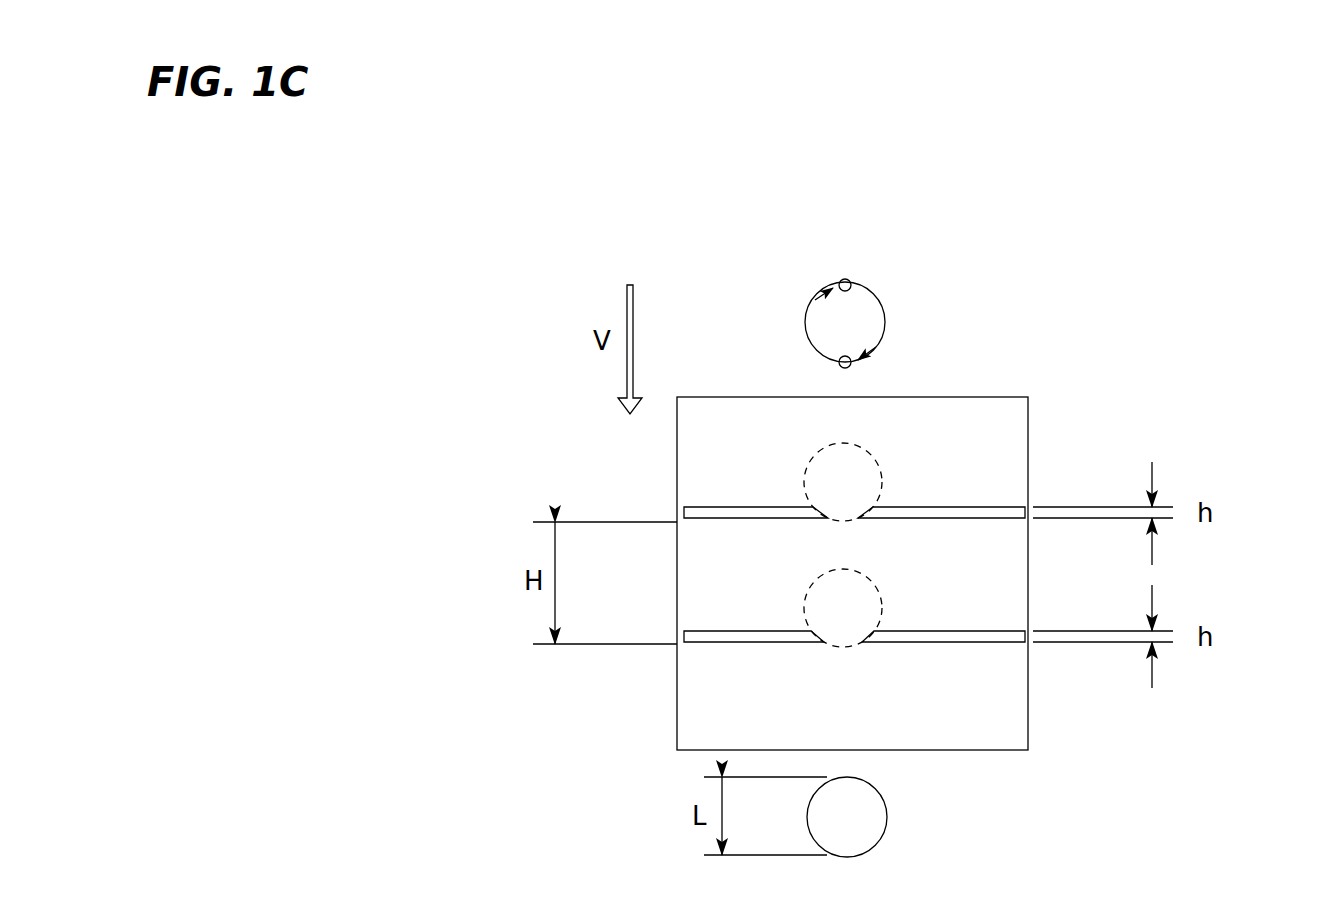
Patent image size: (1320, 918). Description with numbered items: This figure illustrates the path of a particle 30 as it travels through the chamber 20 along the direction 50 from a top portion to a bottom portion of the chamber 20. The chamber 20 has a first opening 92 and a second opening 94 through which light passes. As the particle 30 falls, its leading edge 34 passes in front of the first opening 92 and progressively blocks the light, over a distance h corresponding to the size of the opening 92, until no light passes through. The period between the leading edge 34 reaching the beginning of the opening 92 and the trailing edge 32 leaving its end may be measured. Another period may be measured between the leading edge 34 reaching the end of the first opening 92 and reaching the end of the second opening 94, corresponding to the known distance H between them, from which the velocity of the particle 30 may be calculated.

The chamber 20 is at (665, 485).
The particle 30 is at (872, 292).
The trailing edge 32 is at (805, 285).
The leading edge 34 is at (853, 365).
The direction 50 is at (632, 333).
The first opening 92 is at (1043, 507).
The second opening 94 is at (1043, 631).